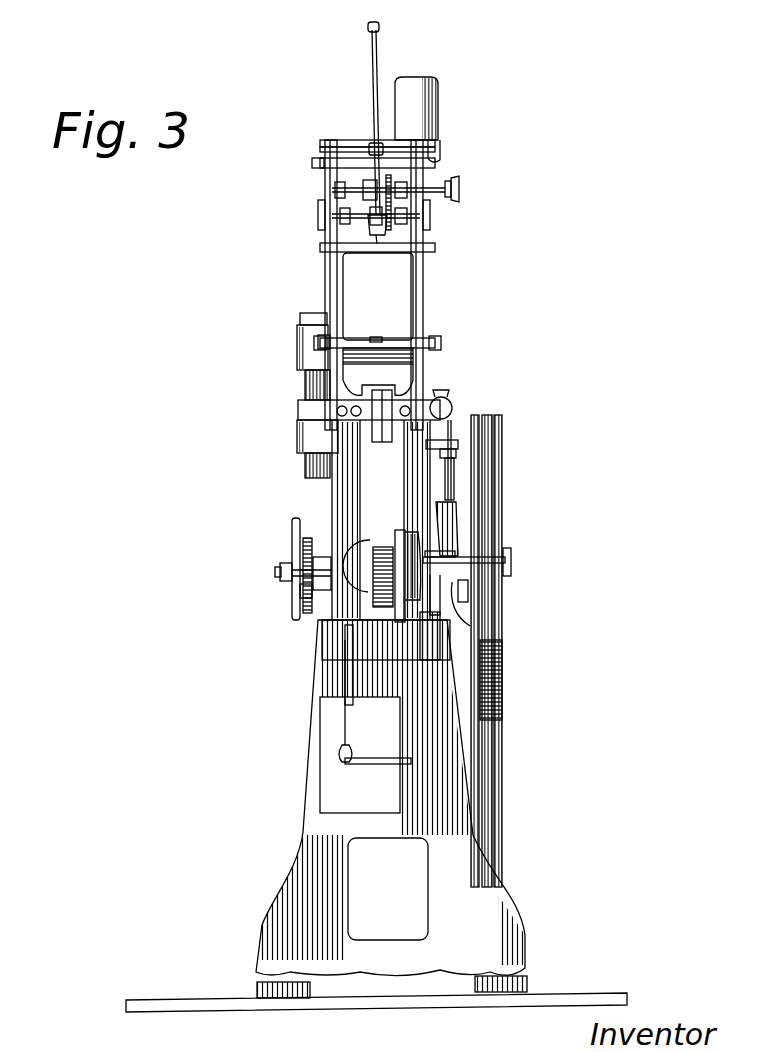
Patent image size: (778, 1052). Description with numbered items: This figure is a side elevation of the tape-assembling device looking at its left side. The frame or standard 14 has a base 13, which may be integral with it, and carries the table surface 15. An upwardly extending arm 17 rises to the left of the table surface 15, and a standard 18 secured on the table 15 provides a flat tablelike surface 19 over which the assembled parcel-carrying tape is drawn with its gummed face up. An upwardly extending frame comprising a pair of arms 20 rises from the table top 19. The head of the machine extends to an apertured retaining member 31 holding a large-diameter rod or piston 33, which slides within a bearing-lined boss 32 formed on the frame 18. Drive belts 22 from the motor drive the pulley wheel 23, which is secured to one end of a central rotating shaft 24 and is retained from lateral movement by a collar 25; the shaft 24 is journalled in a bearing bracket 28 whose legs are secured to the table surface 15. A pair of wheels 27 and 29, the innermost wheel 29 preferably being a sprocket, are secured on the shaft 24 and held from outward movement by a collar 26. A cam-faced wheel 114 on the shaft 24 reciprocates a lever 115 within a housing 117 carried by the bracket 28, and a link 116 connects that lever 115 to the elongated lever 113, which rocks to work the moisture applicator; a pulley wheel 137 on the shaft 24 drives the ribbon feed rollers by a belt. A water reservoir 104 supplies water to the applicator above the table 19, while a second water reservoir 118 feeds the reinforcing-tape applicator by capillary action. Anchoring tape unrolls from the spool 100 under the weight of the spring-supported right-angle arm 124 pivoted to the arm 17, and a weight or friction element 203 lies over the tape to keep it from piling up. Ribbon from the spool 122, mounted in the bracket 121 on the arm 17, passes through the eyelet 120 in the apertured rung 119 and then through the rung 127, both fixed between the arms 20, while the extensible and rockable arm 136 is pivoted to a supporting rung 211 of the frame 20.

The base 13 is at (405, 992).
The frame or standard 14 is at (306, 800).
The table surface 15 is at (332, 642).
The upwardly extending arm 17 is at (430, 660).
The standard 18 is at (336, 497).
The flat tablelike surface 19 is at (300, 402).
The pair of arms 20 is at (330, 274).
The drive belts 22 is at (480, 772).
The pulley wheel 23 is at (500, 680).
The central rotating shaft 24 is at (280, 574).
The collar 25 is at (504, 556).
The collar 26 is at (296, 588).
The wheel 27 is at (294, 532).
The bearing bracket 28 is at (324, 556).
The sprocket wheel 29 is at (304, 554).
The apertured retaining member 31 is at (312, 352).
The boss 32 is at (320, 434).
The rod, piston or arm 33 is at (318, 384).
The spool of anchoring tape 100 is at (446, 497).
The water reservoir 104 is at (440, 90).
The elongated lever 113 is at (456, 446).
The cam or cam-faced wheel 114 is at (472, 626).
The lever 115 is at (452, 474).
The link or arm 116 is at (455, 463).
The housing 117 is at (450, 518).
The water reservoir 118 is at (448, 398).
The apertured rung 119 is at (397, 338).
The aperture or eyelet 120 is at (374, 337).
The bracket 121 is at (372, 612).
The spool or reel 122 is at (360, 575).
The spring supported right angle arm 124 is at (340, 734).
The rung or arm 127 is at (358, 252).
The extensible and rockable arm 136 is at (378, 56).
The pulley wheel 137 is at (466, 592).
The weight or friction element 203 is at (381, 400).
The supporting rung 211 is at (340, 142).